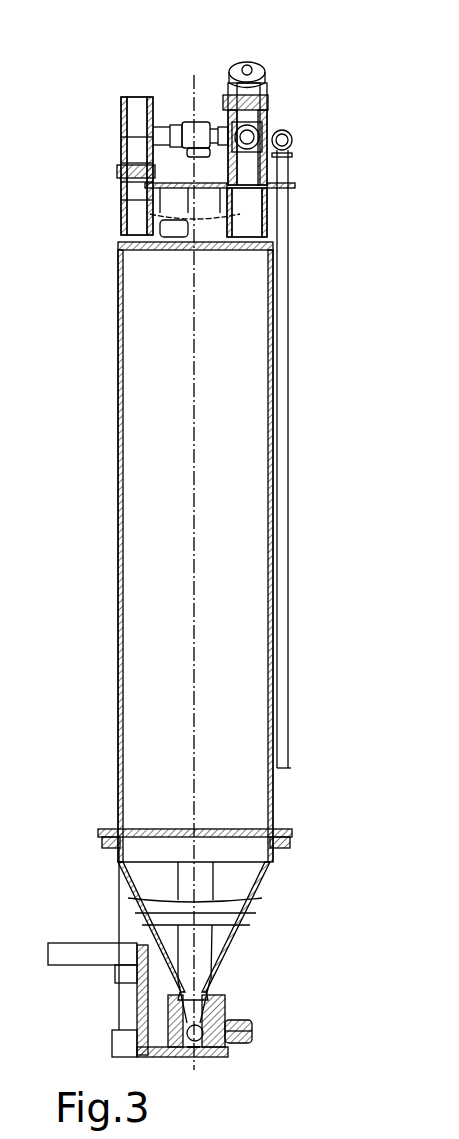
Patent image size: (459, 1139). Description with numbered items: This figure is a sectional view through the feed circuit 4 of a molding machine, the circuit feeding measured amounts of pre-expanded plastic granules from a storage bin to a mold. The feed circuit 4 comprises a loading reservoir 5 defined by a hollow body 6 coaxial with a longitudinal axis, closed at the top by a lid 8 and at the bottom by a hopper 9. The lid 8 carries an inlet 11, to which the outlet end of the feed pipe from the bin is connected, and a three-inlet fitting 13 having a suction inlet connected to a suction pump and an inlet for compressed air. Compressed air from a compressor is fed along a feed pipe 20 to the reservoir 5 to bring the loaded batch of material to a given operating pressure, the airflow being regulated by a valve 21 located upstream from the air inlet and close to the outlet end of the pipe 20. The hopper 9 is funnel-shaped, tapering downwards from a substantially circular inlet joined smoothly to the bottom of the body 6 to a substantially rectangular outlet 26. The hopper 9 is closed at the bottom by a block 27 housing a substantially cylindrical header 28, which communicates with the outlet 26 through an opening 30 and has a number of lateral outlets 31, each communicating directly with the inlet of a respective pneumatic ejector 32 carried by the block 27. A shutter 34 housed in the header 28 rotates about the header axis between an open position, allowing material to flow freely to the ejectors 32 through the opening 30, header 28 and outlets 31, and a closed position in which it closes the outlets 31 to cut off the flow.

The feed circuit 4 is at (18, 100).
The loading reservoir 5 is at (117, 402).
The hollow body 6 is at (120, 530).
The lid 8 is at (135, 238).
The hopper 9 is at (117, 862).
The inlet 11 is at (133, 120).
The three-inlet fitting 13 is at (270, 128).
The feed pipe 20 is at (278, 373).
The valve 21 is at (268, 80).
The outlet 26 is at (215, 967).
The block 27 is at (203, 1000).
The header 28 is at (207, 1057).
The opening 30 is at (228, 1012).
The lateral outlets 31 is at (233, 1052).
The ejector 32 is at (252, 1033).
The shutter 34 is at (183, 1057).